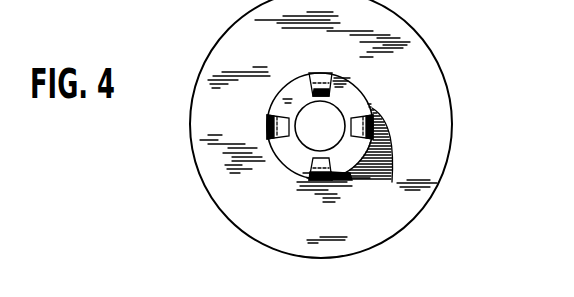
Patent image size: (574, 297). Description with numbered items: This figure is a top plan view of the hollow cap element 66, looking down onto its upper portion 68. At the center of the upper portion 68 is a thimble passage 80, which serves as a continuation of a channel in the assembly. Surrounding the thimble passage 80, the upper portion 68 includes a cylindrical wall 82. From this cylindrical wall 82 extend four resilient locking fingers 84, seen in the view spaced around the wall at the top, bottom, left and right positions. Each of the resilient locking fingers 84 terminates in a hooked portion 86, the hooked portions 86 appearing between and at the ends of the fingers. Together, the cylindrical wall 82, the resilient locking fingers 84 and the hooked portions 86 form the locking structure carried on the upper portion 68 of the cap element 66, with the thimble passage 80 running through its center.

The cap element 66 is at (466, 102).
The upper portion 68 is at (272, 226).
The thimble passage 80 is at (331, 139).
The cylindrical wall 82 is at (292, 86).
The resilient locking fingers 84 is at (323, 72).
The hooked portion 86 is at (354, 118).